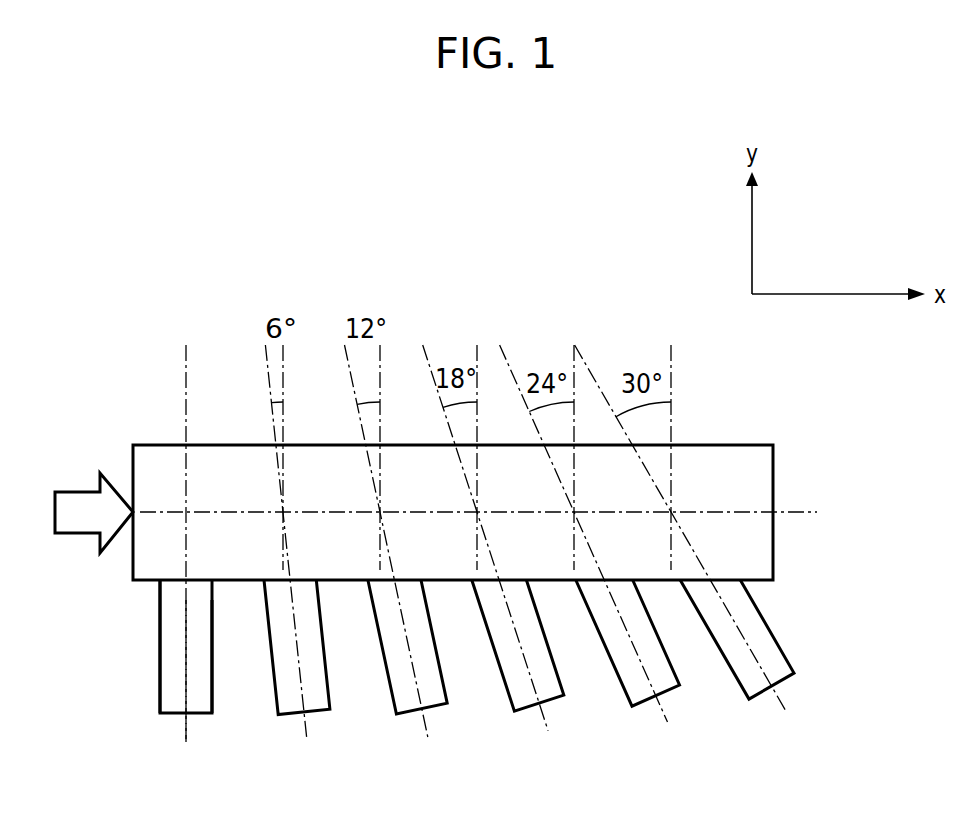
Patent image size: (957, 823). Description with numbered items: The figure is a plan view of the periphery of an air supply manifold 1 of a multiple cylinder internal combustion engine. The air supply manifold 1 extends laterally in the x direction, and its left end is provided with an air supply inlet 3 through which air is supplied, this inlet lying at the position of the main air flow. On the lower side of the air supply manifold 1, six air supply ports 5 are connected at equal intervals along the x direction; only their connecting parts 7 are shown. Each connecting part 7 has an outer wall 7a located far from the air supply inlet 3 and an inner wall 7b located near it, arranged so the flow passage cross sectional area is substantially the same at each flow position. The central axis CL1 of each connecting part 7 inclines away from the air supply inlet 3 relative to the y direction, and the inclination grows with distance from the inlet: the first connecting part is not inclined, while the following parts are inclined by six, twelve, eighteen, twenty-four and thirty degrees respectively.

The air supply manifold 1 is at (720, 445).
The air supply inlet 3 is at (134, 511).
The air supply ports 5 is at (134, 709).
The connecting parts 7 is at (173, 713).
The outer wall 7a is at (212, 685).
The inner wall 7b is at (160, 617).
The central axis CL1 is at (186, 672).